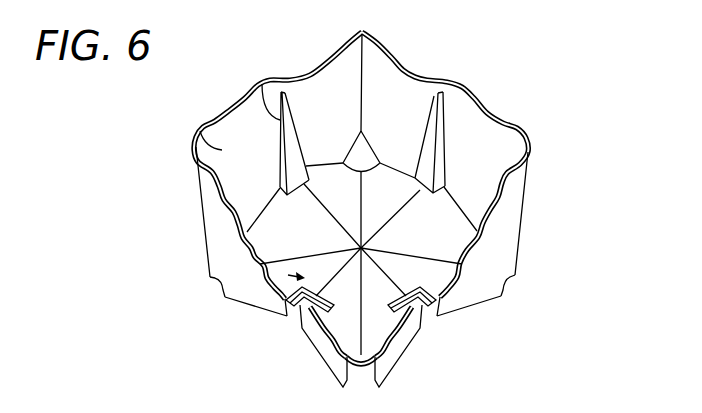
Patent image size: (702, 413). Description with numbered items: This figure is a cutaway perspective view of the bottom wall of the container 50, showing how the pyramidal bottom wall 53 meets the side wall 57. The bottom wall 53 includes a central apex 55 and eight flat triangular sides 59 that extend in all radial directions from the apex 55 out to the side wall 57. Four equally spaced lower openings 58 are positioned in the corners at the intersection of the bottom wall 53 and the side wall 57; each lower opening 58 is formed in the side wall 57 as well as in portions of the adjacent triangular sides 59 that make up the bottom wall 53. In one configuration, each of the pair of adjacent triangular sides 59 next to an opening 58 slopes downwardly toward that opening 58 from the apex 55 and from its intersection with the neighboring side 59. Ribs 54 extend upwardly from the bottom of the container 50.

The container 50 is at (362, 200).
The bottom wall 53 is at (298, 277).
The ribs 54 is at (263, 83).
The apex 55 is at (363, 248).
The side wall 57 is at (203, 123).
The lower openings 58 is at (373, 147).
The triangular sides 59 is at (362, 216).